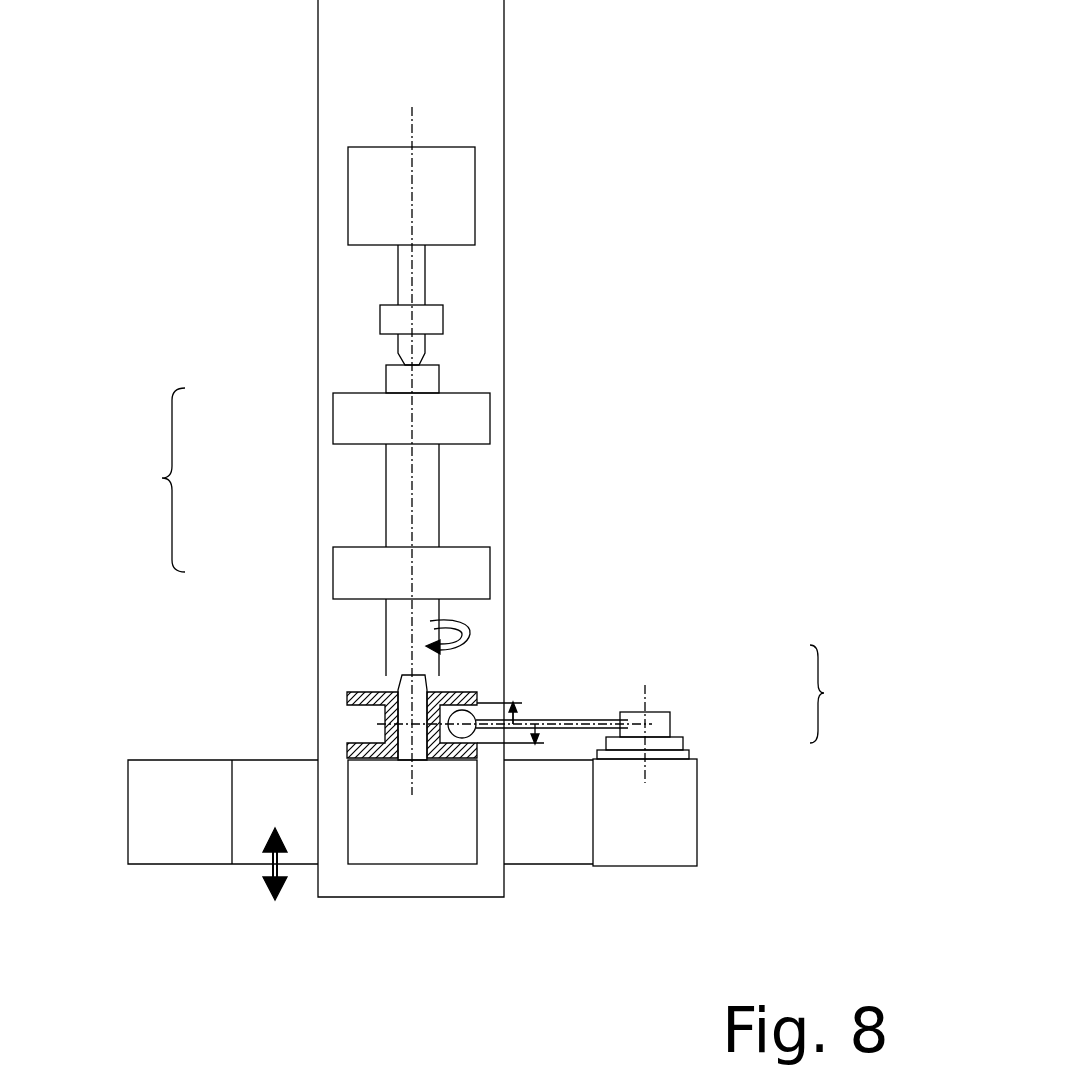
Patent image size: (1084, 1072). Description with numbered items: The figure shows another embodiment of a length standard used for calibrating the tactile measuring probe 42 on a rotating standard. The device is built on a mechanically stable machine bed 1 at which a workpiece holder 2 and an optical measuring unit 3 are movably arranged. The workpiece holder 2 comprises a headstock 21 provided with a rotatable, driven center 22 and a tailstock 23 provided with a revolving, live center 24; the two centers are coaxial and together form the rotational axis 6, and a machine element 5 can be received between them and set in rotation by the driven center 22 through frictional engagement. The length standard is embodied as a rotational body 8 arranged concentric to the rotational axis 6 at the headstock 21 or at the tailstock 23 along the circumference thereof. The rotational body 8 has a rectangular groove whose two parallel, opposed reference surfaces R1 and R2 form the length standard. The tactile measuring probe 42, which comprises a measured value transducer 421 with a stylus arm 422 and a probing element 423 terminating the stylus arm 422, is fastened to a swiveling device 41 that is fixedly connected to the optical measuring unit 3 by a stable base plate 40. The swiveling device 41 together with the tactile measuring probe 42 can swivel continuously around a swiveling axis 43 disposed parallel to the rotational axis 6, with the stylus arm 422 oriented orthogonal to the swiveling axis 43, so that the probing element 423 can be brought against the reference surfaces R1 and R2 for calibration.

The machine bed 1 is at (440, 57).
The workpiece holder 2 is at (162, 480).
The optical measuring unit 3 is at (272, 778).
The machine element 5 is at (424, 495).
The rotational axis 6 is at (412, 107).
The rotational body 8 is at (463, 710).
The headstock 21 is at (365, 772).
The driven center 22 is at (392, 690).
The tailstock 23 is at (367, 228).
The revolving center 24 is at (405, 346).
The base plate 40 is at (680, 755).
The swiveling device 41 is at (673, 745).
The tactile measuring probe 42 is at (833, 694).
The measured value transducer 421 is at (663, 730).
The stylus arm 422 is at (585, 720).
The probing element 423 is at (480, 692).
The swiveling axis 43 is at (645, 685).
The reference surface R1 is at (537, 717).
The reference surface R2 is at (513, 717).